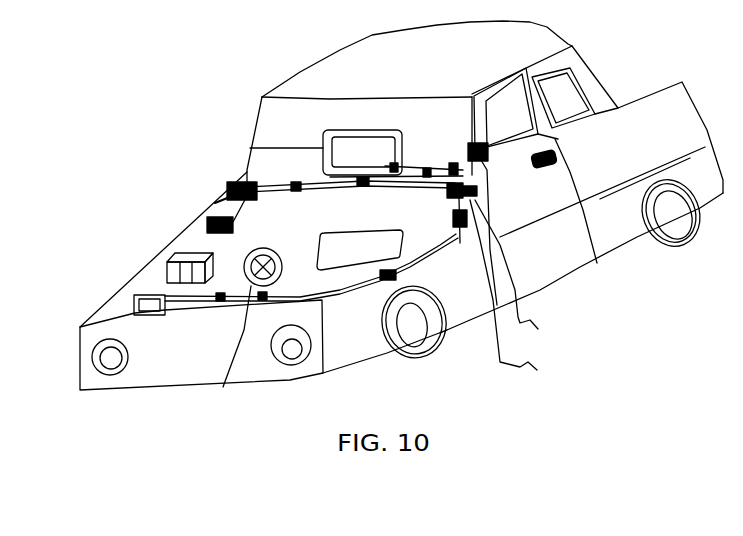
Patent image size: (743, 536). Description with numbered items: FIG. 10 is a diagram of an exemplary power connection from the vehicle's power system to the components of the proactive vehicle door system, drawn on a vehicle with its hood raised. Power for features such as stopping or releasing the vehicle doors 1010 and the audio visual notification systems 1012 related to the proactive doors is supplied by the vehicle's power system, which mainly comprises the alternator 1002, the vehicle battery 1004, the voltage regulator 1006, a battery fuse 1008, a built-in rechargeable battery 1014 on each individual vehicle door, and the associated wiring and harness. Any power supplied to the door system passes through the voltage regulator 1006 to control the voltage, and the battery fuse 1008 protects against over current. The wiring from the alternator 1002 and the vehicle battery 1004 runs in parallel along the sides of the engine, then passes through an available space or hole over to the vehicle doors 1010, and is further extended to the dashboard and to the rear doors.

The alternator 1002 is at (263, 304).
The vehicle battery 1004 is at (141, 267).
The voltage regulator 1006 is at (255, 274).
The battery fuse 1008 is at (294, 203).
The vehicle doors 1010 is at (529, 271).
The audio visual notification systems 1012 is at (370, 104).
The built-in rechargeable battery 1014 is at (528, 292).